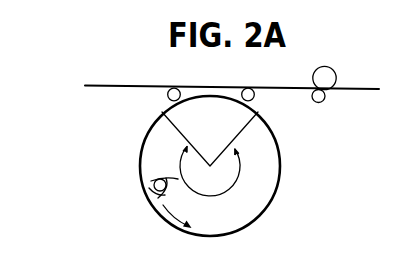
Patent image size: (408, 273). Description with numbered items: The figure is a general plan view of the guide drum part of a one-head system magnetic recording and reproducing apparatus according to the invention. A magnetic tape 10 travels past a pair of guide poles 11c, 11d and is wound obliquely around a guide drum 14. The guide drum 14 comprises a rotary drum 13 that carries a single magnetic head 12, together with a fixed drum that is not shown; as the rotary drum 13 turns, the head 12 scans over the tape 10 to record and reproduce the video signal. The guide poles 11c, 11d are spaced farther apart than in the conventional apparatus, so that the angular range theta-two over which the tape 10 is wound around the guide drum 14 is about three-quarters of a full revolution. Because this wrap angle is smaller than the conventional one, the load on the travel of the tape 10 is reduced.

The magnetic tape 10 is at (126, 85).
The guide pole 11c is at (179, 88).
The guide pole 11d is at (242, 86).
The magnetic head 12 is at (153, 202).
The rotary drum 13 is at (145, 140).
The guide drum 14 is at (284, 168).